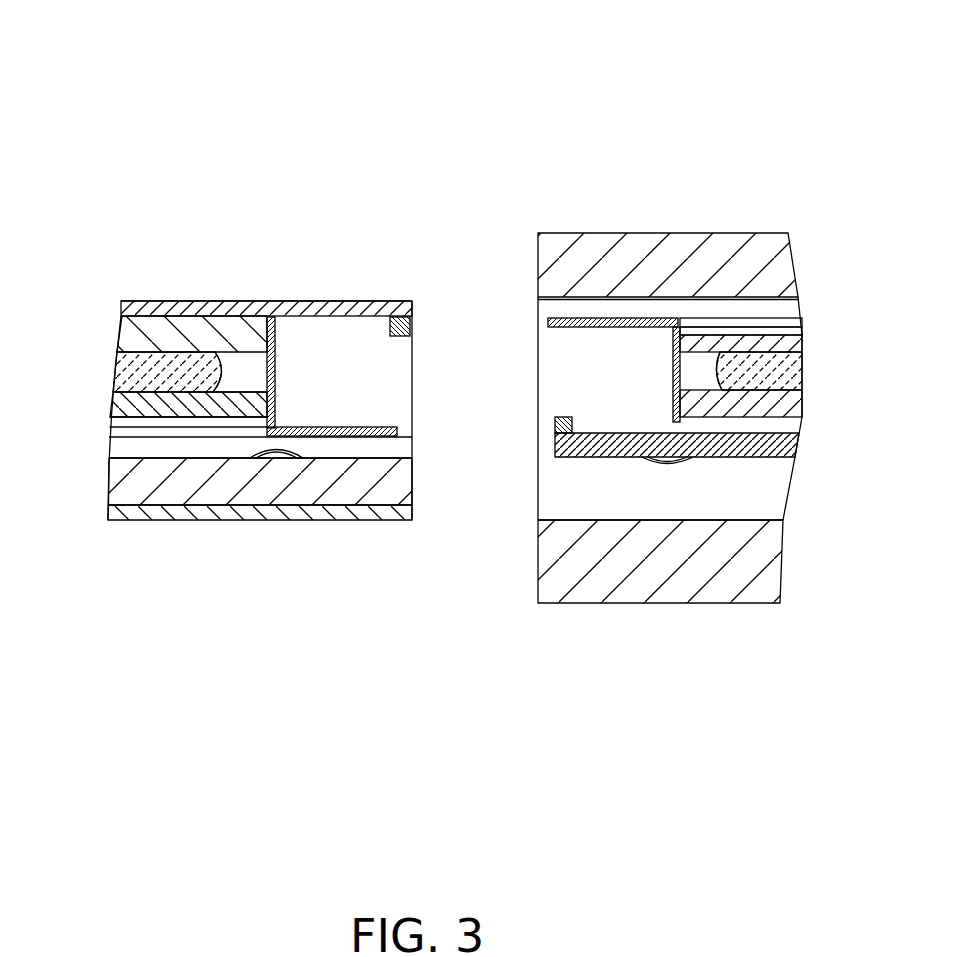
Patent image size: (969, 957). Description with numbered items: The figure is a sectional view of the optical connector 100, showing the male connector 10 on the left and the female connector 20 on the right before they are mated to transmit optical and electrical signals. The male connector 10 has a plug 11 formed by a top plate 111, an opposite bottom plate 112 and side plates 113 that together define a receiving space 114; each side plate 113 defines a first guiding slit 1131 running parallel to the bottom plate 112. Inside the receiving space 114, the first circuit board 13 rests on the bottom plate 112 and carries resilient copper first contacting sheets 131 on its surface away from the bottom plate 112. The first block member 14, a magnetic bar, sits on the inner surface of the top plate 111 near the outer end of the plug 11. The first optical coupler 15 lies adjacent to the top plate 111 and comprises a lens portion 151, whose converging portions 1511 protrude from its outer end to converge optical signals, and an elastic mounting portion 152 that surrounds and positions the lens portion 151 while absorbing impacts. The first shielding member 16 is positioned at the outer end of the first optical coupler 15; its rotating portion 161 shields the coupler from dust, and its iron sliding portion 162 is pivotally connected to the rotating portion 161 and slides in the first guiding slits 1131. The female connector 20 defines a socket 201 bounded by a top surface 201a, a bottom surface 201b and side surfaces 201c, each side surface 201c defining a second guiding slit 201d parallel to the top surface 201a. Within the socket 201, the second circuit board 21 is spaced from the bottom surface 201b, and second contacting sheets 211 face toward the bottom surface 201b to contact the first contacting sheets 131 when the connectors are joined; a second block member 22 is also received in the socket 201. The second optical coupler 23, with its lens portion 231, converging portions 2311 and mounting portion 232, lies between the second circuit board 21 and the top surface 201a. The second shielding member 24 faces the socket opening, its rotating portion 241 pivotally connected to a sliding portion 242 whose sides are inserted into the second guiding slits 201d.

The optical connector 100 is at (497, 72).
The male connector 10 is at (285, 272).
The plug 11 is at (185, 305).
The top plate 111 is at (348, 300).
The bottom plate 112 is at (168, 513).
The side plate 113 is at (397, 350).
The first guiding slit 1131 is at (118, 430).
The receiving space 114 is at (380, 448).
The first circuit board 13 is at (320, 483).
The first contacting sheet 131 is at (268, 457).
The first block member 14 is at (408, 323).
The first optical coupler 15 is at (49, 322).
The lens portion 151 is at (143, 370).
The converging portion 1511 is at (217, 357).
The mounting portion 152 is at (140, 328).
The first shielding member 16 is at (474, 367).
The rotating portion 161 is at (275, 368).
The sliding portion 162 is at (378, 428).
The female connector 20 is at (540, 222).
The socket 201 is at (718, 505).
The top surface 201a is at (802, 311).
The bottom surface 201b is at (567, 517).
The side surface 201c is at (555, 350).
The second guiding slit 201d is at (802, 325).
The second circuit board 21 is at (780, 447).
The second contacting sheet 211 is at (667, 463).
The second block member 22 is at (555, 437).
The second optical coupler 23 is at (837, 135).
The lens portion 231 is at (772, 370).
The converging portion 2311 is at (719, 380).
The mounting portion 232 is at (752, 340).
The second shielding member 24 is at (667, 183).
The rotating portion 241 is at (677, 358).
The sliding portion 242 is at (602, 322).